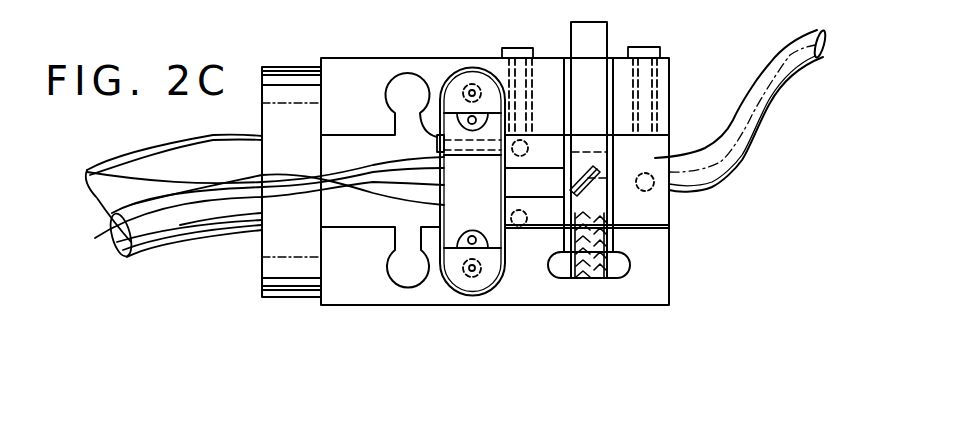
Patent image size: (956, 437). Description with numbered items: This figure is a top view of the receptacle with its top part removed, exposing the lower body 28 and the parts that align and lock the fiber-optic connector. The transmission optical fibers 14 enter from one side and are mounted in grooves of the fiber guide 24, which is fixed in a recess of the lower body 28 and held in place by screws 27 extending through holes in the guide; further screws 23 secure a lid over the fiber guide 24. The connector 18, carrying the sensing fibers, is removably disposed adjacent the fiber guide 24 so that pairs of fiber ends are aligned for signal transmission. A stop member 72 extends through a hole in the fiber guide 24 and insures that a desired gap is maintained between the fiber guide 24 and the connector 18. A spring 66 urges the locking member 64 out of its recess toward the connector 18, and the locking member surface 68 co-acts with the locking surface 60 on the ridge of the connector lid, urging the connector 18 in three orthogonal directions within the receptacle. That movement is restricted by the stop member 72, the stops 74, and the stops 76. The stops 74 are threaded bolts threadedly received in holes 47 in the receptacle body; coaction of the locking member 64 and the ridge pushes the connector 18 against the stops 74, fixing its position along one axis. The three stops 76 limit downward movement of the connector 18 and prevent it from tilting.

The transmission optical fibers 14 is at (228, 190).
The connector 18 is at (740, 160).
The screws 23 is at (473, 116).
The fiber guide 24 is at (437, 227).
The screws 27 is at (463, 97).
The lower body 28 is at (672, 290).
The holes 47 is at (532, 90).
The locking surface 60 is at (607, 170).
The locking member 64 is at (607, 42).
The spring 66 is at (610, 268).
The locking member surface 68 is at (574, 203).
The stop member 72 is at (437, 143).
The stops 74 is at (510, 48).
The stops 76 is at (528, 149).